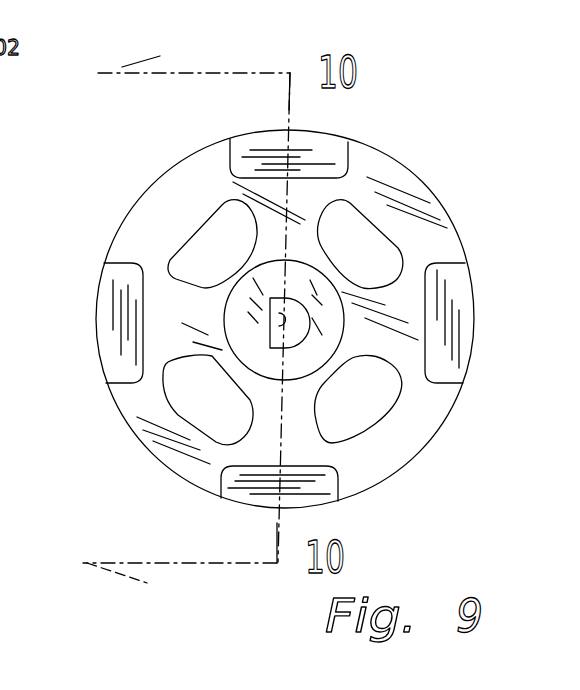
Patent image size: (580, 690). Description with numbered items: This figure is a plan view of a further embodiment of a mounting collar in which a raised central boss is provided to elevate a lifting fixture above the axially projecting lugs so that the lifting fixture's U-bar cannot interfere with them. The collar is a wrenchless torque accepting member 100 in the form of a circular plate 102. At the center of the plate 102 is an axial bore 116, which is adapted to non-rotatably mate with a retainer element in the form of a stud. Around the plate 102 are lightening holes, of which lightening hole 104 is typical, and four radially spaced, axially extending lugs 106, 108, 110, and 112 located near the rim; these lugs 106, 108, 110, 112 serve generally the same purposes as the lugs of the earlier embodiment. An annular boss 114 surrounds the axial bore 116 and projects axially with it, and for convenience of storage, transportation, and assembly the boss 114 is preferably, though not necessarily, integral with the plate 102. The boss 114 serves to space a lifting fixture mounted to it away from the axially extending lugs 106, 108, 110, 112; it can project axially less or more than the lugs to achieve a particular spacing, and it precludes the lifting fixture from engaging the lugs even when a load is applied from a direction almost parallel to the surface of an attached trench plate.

The wrenchless torque accepting member 100 is at (393, 110).
The circular plate 102 is at (393, 157).
The lightening hole 104 is at (357, 423).
The lug 106 is at (268, 142).
The lug 108 is at (127, 280).
The lug 110 is at (243, 482).
The lug 112 is at (458, 293).
The annular boss 114 is at (258, 378).
The axial bore 116 is at (287, 320).